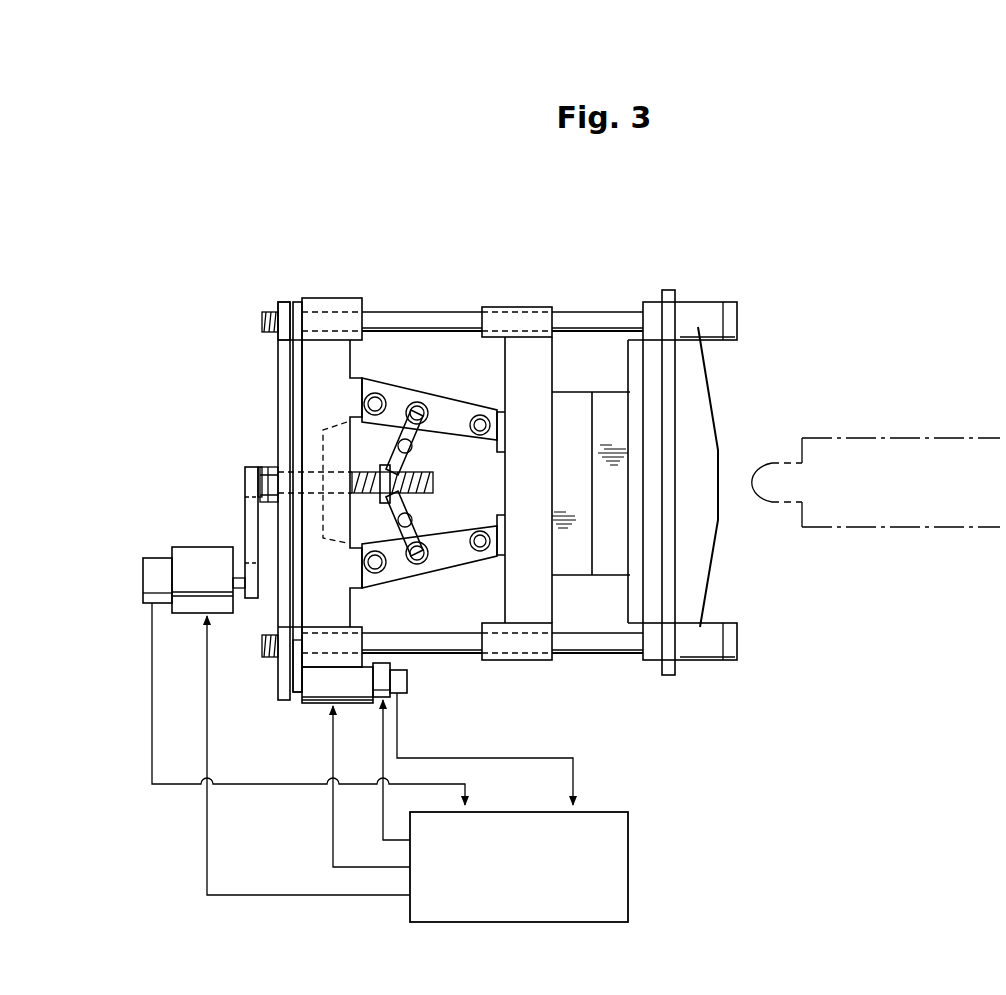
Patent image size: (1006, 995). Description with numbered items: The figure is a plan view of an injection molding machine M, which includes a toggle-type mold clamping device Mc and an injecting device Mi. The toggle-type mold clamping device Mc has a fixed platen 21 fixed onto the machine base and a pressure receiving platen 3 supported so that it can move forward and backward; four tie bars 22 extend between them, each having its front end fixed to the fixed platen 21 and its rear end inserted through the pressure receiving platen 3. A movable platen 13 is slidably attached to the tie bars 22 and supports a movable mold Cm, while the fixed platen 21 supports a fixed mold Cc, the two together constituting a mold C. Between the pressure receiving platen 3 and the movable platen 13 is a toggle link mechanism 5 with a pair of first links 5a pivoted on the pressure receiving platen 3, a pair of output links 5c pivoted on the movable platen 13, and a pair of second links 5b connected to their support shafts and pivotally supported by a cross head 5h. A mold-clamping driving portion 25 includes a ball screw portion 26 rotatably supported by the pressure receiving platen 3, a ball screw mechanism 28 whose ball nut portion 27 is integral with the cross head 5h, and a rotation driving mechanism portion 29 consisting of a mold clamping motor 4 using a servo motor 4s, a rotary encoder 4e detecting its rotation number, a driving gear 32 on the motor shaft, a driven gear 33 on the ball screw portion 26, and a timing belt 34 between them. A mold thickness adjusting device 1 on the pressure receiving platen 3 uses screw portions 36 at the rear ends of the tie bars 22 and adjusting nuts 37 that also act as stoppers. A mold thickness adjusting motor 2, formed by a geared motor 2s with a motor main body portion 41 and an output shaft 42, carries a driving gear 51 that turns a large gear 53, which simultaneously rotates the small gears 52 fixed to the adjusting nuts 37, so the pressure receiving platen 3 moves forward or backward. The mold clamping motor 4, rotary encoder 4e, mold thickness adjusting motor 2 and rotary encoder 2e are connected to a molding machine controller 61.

The mold thickness adjusting device 1 is at (200, 340).
The mold thickness adjusting motor 2 is at (390, 718).
The rotary encoder 2e is at (410, 693).
The geared motor 2s is at (322, 708).
The pressure receiving platen 3 is at (340, 298).
The mold clamping motor 4 is at (146, 610).
The rotary encoder 4e is at (143, 583).
The servo motor 4s is at (172, 551).
The toggle link mechanism 5 is at (437, 540).
The first links 5a is at (397, 395).
The second links 5b is at (420, 443).
The output links 5c is at (453, 405).
The cross head 5h is at (387, 464).
The movable platen 13 is at (523, 307).
The fixed platen 21 is at (710, 575).
The tie bars 22 is at (601, 309).
The mold-clamping driving portion 25 is at (125, 472).
The ball screw portion 26 is at (435, 483).
The ball nut portion 27 is at (378, 470).
The ball screw mechanism 28 is at (380, 522).
The rotation driving mechanism portion 29 is at (157, 520).
The driving gear 32 is at (240, 580).
The driven gear 33 is at (245, 480).
The timing belt 34 is at (245, 520).
The screw portions 36 is at (262, 322).
The adjusting nuts 37 is at (294, 301).
The motor main body portion 41 is at (313, 703).
The output shaft 42 is at (300, 680).
The driving gear 51 is at (281, 678).
The small gears 52 is at (283, 301).
The large gear 53 is at (278, 388).
The molding machine controller 61 is at (630, 872).
The mold C is at (590, 380).
The fixed mold Cc is at (608, 390).
The movable mold Cm is at (568, 575).
The injection molding machine M is at (845, 318).
The toggle-type mold clamping device Mc is at (725, 290).
The injecting device Mi is at (910, 395).